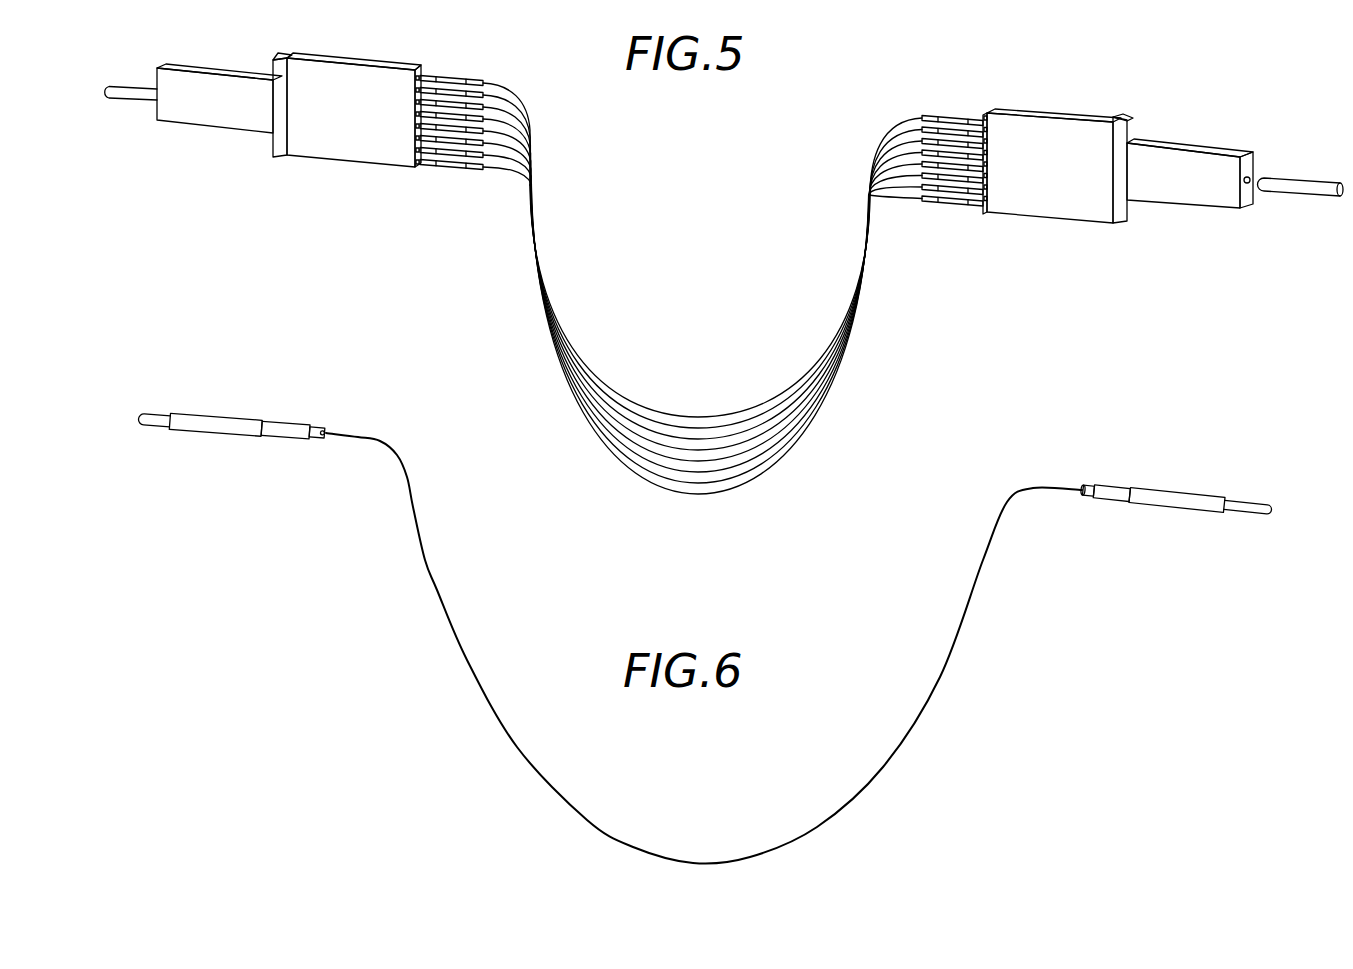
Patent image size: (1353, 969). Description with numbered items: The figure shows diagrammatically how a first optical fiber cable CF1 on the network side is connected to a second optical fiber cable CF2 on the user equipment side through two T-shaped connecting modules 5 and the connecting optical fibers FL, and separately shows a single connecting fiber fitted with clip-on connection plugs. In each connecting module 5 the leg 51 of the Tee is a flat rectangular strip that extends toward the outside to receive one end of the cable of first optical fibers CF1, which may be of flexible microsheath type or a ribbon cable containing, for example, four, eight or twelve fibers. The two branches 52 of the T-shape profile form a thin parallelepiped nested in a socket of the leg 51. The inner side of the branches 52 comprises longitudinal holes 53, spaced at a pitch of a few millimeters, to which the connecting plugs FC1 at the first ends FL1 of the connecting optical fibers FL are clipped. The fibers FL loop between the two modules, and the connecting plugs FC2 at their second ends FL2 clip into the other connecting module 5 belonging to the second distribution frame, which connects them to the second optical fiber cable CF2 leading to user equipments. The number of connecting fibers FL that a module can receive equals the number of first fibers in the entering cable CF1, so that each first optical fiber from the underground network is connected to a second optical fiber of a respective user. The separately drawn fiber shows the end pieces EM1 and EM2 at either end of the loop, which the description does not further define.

In FIG. 5, the connecting module 5 is at (721, 168).
In FIG. 5, the leg of the Tee 51 is at (213, 115).
In FIG. 5, the branches of the T-shape profile 52 is at (340, 145).
In FIG. 5, the longitudinal holes 53 is at (421, 75).
In FIG. 5, the connecting optical fibers FL is at (530, 108).
In FIG. 6, the connecting optical fibers FL is at (695, 862).
In FIG. 6, the first ends of the connecting optical fibers FL1 is at (408, 476).
In FIG. 5, the second ends of the connecting optical fibers FL2 is at (873, 146).
In FIG. 6, the second ends of the connecting optical fibers FL2 is at (1010, 493).
In FIG. 5, the connecting plugs at the first ends FC1 is at (455, 167).
In FIG. 5, the connecting plugs at the second ends FC2 is at (945, 200).
In FIG. 5, the cable of first optical fibers CF1 is at (118, 90).
In FIG. 5, the second optical fiber cable CF2 is at (1307, 187).
In FIG. 6, the first end member EM1 is at (212, 428).
In FIG. 6, the second end member EM2 is at (1155, 499).